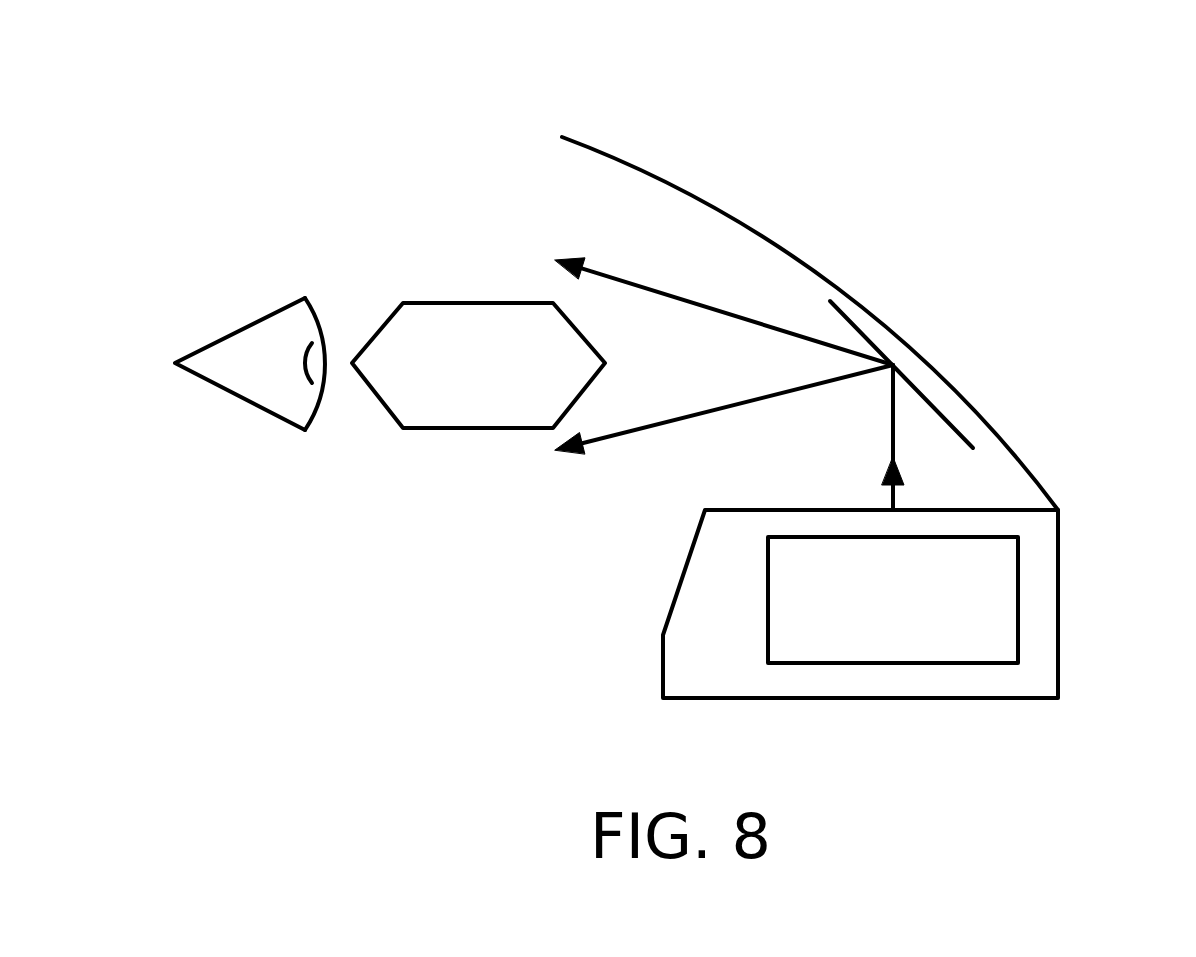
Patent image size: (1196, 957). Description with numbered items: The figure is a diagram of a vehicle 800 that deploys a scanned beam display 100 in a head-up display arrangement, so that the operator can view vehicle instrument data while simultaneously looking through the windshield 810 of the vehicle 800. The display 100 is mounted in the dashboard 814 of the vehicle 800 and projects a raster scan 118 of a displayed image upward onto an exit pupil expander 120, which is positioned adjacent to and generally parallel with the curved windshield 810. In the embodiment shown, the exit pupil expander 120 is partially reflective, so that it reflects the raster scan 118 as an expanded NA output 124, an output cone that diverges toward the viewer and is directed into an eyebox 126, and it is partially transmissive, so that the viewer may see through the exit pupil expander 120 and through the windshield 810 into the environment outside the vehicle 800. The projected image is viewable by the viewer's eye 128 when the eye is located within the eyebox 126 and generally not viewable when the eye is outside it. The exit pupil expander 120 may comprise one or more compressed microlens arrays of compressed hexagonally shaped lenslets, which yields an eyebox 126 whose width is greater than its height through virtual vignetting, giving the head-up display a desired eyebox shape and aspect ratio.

The vehicle 800 is at (1058, 138).
The windshield 810 is at (703, 198).
The exit pupil expander 120 is at (857, 320).
The expanded NA output 124 is at (623, 273).
The raster scan 118 is at (890, 497).
The dashboard 814 is at (1060, 608).
The scanned beam display 100 is at (1020, 568).
The eyebox 126 is at (478, 303).
The viewer's eye 128 is at (292, 297).